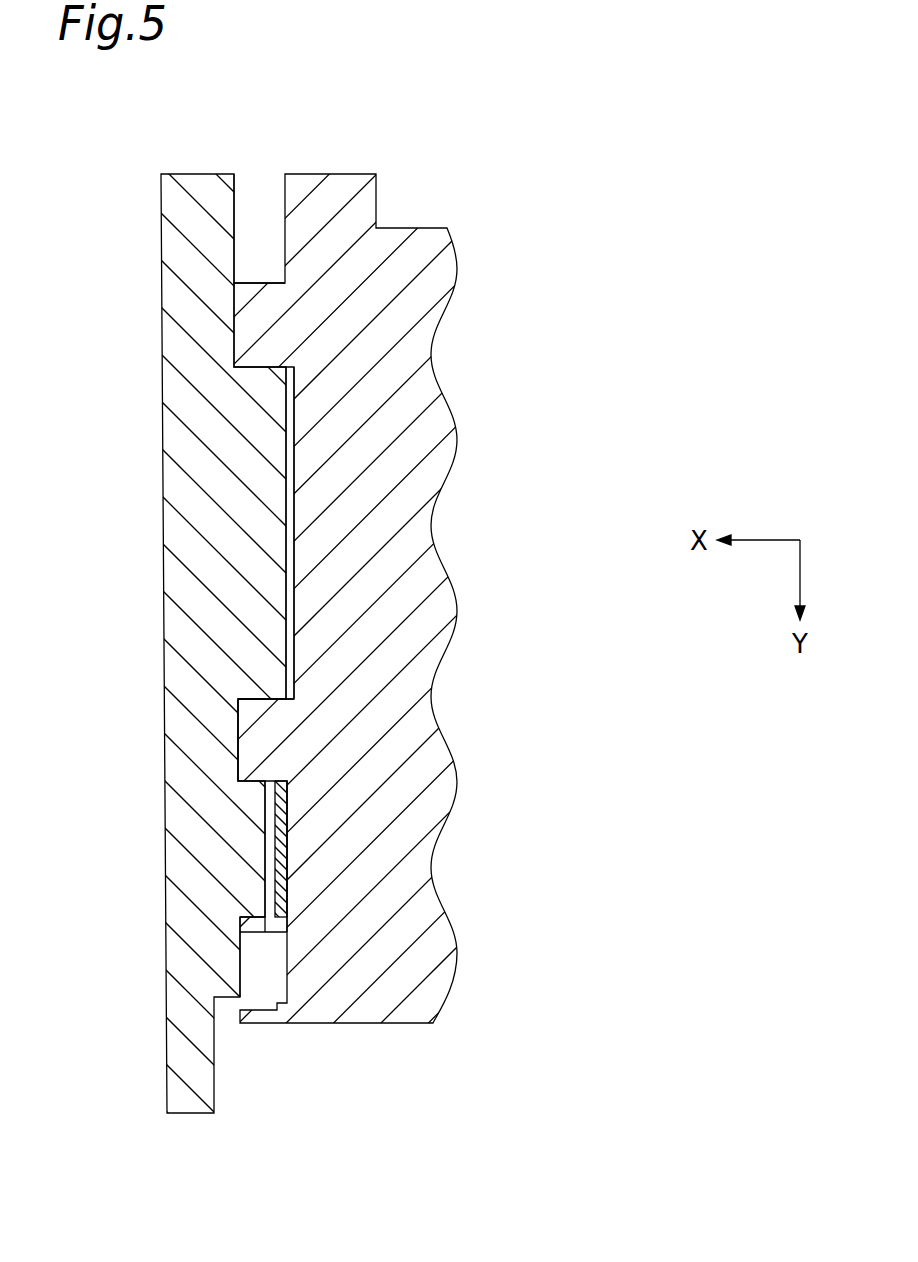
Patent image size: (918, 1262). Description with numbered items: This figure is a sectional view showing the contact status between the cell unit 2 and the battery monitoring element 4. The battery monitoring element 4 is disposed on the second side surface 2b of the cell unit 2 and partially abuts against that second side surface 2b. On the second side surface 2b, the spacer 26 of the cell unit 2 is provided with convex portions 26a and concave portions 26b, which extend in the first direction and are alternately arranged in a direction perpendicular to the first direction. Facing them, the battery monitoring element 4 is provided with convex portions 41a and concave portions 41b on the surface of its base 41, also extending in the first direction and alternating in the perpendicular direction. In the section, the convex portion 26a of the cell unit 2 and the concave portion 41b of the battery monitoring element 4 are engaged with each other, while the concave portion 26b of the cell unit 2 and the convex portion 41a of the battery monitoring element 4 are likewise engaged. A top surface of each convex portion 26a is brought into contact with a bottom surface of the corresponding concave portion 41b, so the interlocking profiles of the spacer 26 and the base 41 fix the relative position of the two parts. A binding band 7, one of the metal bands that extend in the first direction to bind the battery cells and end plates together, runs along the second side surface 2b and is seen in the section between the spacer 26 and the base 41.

The cell unit 2 is at (413, 224).
The second side surface 2b is at (284, 557).
The battery monitoring element 4 is at (158, 210).
The binding band 7 is at (275, 862).
The spacer 26 is at (416, 353).
The convex portion 26a is at (260, 295).
The concave portion 26b is at (296, 507).
The base 41 is at (170, 295).
The convex portion 41a is at (273, 393).
The concave portion 41b is at (238, 222).